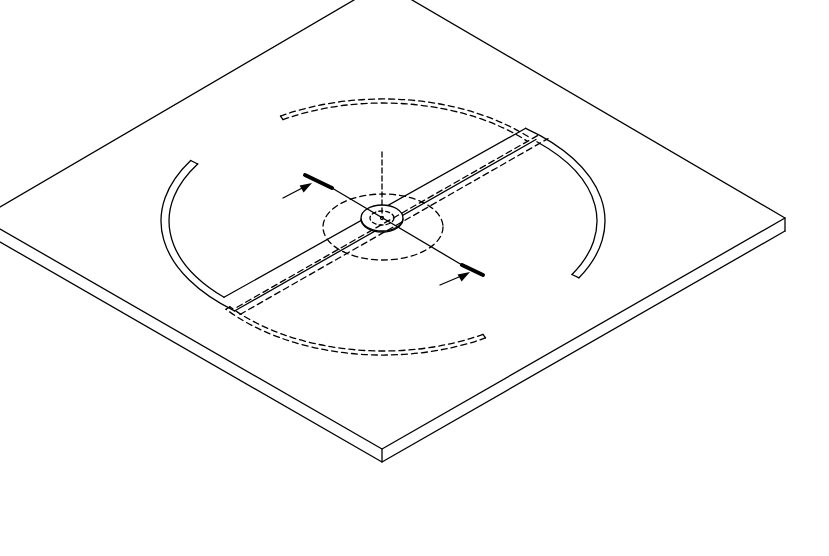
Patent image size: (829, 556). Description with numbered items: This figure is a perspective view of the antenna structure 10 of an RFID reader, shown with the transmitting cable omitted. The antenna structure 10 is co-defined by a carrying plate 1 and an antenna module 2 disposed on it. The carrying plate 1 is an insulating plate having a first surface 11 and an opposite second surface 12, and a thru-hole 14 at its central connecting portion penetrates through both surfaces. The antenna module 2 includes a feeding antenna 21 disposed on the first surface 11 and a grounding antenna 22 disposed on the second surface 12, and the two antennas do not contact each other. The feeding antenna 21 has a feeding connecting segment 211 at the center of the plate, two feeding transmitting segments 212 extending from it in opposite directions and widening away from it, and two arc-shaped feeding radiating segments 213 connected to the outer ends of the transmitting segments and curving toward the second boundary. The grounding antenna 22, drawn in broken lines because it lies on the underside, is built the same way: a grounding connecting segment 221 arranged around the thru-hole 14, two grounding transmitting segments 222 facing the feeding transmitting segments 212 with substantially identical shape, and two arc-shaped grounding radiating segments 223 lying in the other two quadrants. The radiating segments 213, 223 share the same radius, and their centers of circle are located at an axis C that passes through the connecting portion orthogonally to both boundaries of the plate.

The antenna structure 10 is at (392, 272).
The carrying plate 1 is at (392, 231).
The first surface 11 is at (668, 183).
The second surface 12 is at (691, 293).
The antenna module 2 is at (380, 224).
The feeding antenna 21 is at (380, 189).
The feeding connecting segment 211 is at (381, 205).
The feeding transmitting segments 212 is at (440, 178).
The feeding radiating segments 213 is at (162, 213).
The grounding antenna 22 is at (406, 230).
The grounding connecting segment 221 is at (379, 261).
The grounding transmitting segments 222 is at (508, 162).
The grounding radiating segments 223 is at (370, 100).
The thru-hole 14 is at (400, 219).
The axis C is at (390, 168).